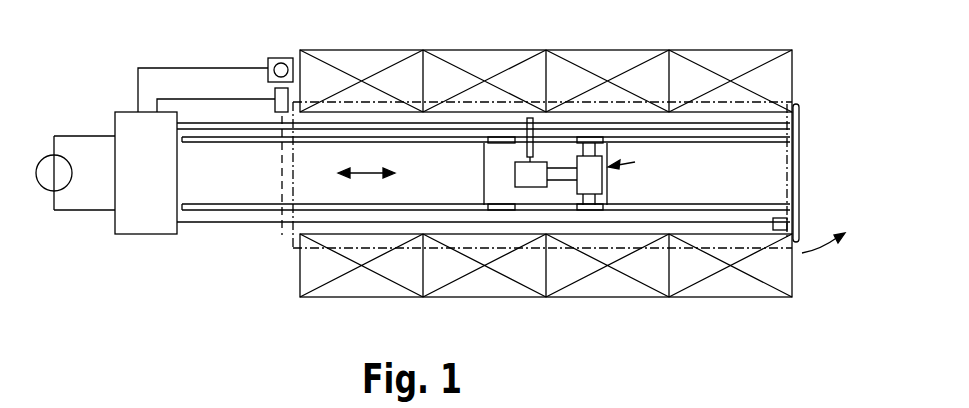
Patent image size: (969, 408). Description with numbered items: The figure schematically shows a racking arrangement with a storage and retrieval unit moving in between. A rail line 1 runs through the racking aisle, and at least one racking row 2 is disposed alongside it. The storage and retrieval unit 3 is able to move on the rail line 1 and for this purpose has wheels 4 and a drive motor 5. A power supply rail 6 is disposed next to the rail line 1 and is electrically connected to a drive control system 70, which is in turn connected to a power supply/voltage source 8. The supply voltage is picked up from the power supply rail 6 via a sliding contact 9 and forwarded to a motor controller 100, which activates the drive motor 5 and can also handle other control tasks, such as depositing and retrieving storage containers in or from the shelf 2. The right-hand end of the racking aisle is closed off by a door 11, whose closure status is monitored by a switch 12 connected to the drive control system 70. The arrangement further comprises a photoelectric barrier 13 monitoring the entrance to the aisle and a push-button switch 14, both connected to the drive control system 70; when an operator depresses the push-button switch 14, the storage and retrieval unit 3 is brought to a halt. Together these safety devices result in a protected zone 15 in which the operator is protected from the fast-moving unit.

The rail line 1 is at (203, 210).
The racking row 2 is at (777, 92).
The storage and retrieval unit 3 is at (635, 160).
The wheels 4 is at (500, 140).
The drive motor 5 is at (595, 182).
The power supply rail 6 is at (220, 125).
The power supply/voltage source 8 is at (43, 177).
The sliding contact 9 is at (528, 118).
The door 11 is at (796, 157).
The switch 12 is at (790, 222).
The photoelectric barrier 13 is at (273, 93).
The push-button switch 14 is at (267, 58).
The protected zone 15 is at (473, 102).
The drive control system 70 is at (115, 122).
The motor controller 100 is at (518, 182).